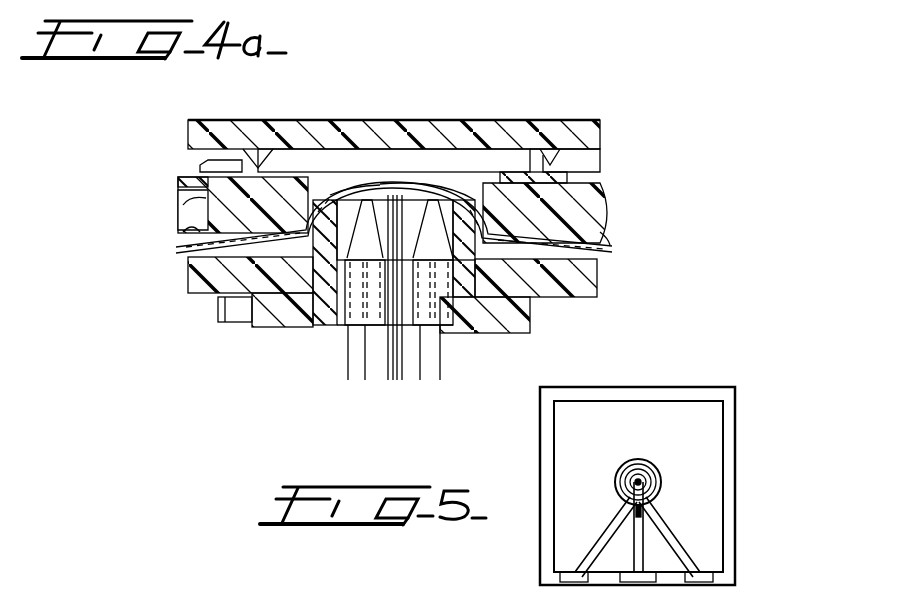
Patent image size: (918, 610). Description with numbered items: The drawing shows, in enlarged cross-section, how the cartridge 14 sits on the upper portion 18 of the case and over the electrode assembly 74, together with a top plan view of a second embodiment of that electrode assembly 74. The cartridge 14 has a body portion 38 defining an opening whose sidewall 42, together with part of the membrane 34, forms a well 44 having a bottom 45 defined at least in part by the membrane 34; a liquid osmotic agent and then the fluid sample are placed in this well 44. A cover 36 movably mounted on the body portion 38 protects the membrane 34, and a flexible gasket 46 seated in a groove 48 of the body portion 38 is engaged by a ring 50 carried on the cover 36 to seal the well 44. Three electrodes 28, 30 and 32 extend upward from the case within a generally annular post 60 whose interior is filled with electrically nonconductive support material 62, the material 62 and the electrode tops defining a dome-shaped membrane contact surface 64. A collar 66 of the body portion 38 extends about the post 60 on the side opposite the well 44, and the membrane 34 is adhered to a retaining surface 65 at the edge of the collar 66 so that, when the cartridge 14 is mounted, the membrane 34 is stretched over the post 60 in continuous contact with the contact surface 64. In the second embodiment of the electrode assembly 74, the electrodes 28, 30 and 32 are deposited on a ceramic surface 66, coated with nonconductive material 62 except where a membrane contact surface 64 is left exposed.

In FIG. 4A, the cartridge 14 is at (610, 159).
In FIG. 4A, the upper portion 18 is at (578, 285).
In FIG. 4A, the electrode 28 is at (356, 380).
In FIG. 5, the electrode 28 is at (598, 536).
In FIG. 4A, the electrode 30 is at (392, 380).
In FIG. 5, the electrode 30 is at (645, 550).
In FIG. 4A, the electrode 32 is at (428, 380).
In FIG. 5, the electrode 32 is at (680, 522).
In FIG. 4A, the membrane 34 is at (345, 172).
In FIG. 4A, the cover 36 is at (190, 130).
In FIG. 4A, the body portion 38 is at (197, 205).
In FIG. 4A, the sidewall 42 is at (416, 185).
In FIG. 4A, the well 44 is at (451, 190).
In FIG. 4A, the bottom 45 is at (380, 187).
In FIG. 4A, the flexible gasket 46 is at (198, 222).
In FIG. 4A, the groove 48 is at (195, 182).
In FIG. 4A, the ring 50 is at (250, 149).
In FIG. 4A, the post 60 is at (458, 280).
In FIG. 4A, the electrically nonconductive support material 62 is at (340, 316).
In FIG. 5, the electrically nonconductive support material 62 is at (575, 442).
In FIG. 4A, the membrane contact surface 64 is at (395, 230).
In FIG. 5, the membrane contact surface 64 is at (620, 484).
In FIG. 4A, the retaining surface 65 is at (190, 240).
In FIG. 5, the collar 66 is at (725, 487).
In FIG. 4A, the electrode assembly 74 is at (520, 312).
In FIG. 5, the electrode assembly 74 is at (737, 456).